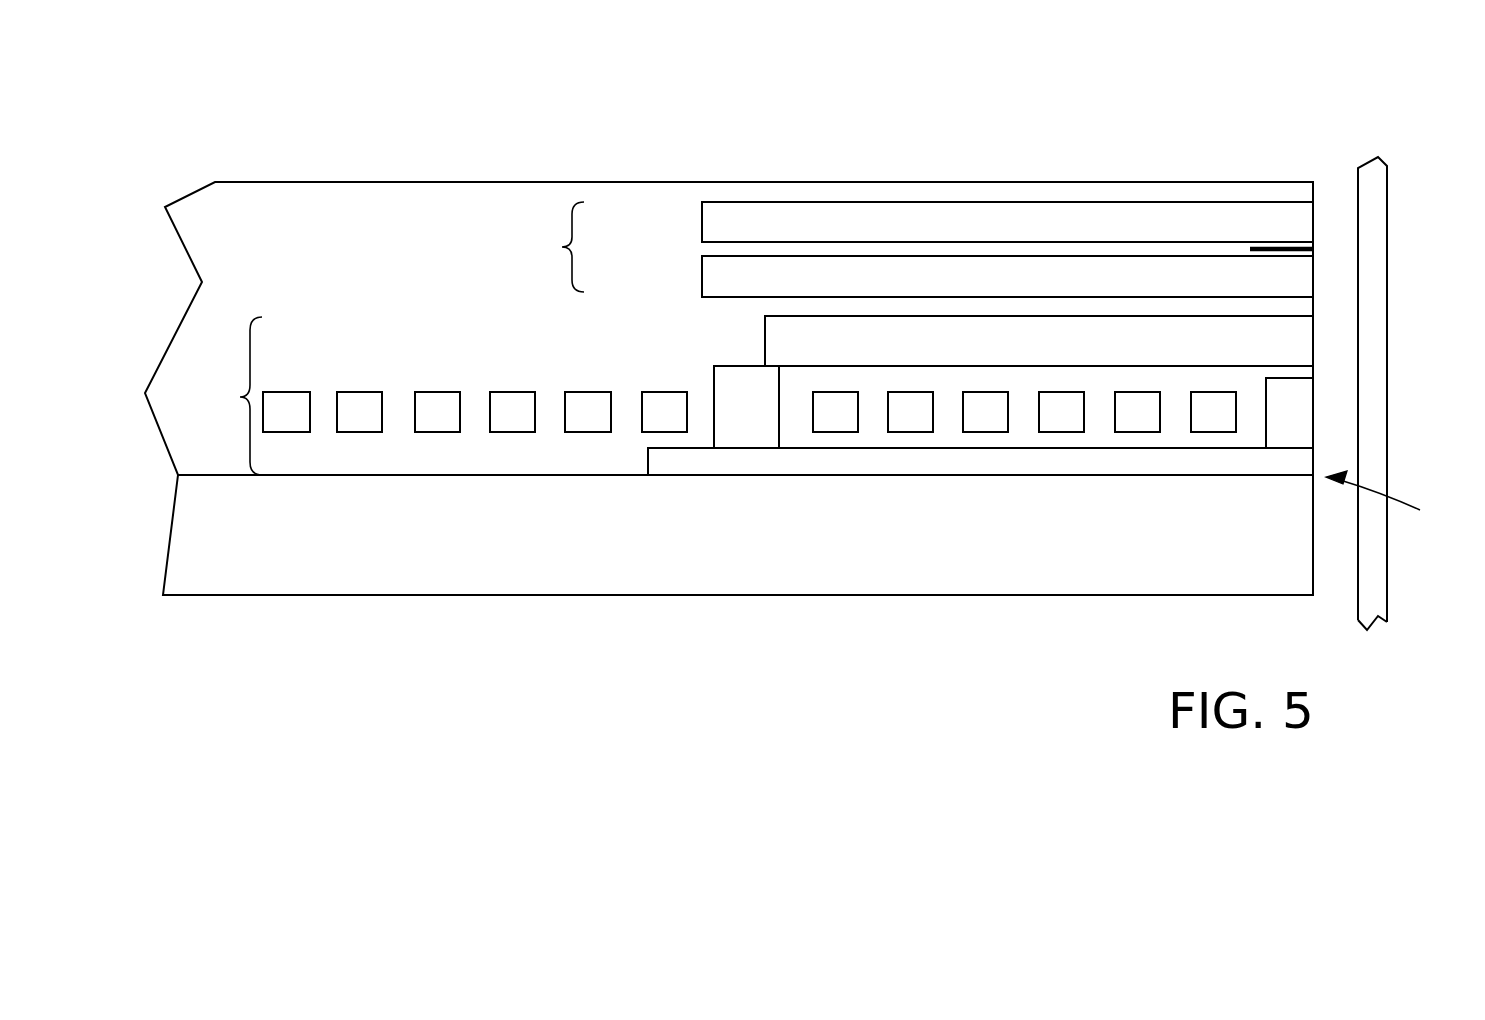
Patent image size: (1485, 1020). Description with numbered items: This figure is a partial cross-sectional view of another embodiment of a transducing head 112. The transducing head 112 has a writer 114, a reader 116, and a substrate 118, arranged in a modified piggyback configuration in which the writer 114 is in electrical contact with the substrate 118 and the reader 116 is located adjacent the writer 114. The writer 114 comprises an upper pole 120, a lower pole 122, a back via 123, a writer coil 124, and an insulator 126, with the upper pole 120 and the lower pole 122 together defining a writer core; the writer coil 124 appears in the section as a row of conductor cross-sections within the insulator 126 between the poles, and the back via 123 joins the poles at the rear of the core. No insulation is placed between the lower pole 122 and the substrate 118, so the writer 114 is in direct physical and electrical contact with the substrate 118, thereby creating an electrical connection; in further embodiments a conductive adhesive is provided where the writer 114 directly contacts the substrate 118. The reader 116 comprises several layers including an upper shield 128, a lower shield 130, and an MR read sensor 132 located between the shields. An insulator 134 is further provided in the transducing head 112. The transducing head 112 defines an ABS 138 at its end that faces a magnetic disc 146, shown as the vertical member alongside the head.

The transducing head 112 is at (1010, 138).
The writer 114 is at (227, 396).
The reader 116 is at (551, 247).
The substrate 118 is at (1032, 543).
The upper pole 120 is at (1292, 331).
The lower pole 122 is at (1287, 460).
The back via 123 is at (736, 428).
The writer coil 124 is at (357, 396).
The insulator 126 is at (795, 422).
The upper shield 128 is at (702, 220).
The lower shield 130 is at (702, 277).
The MR read sensor 132 is at (1313, 250).
The insulator 134 is at (682, 343).
The ABS 138 is at (1393, 505).
The magnetic disc 146 is at (1378, 558).